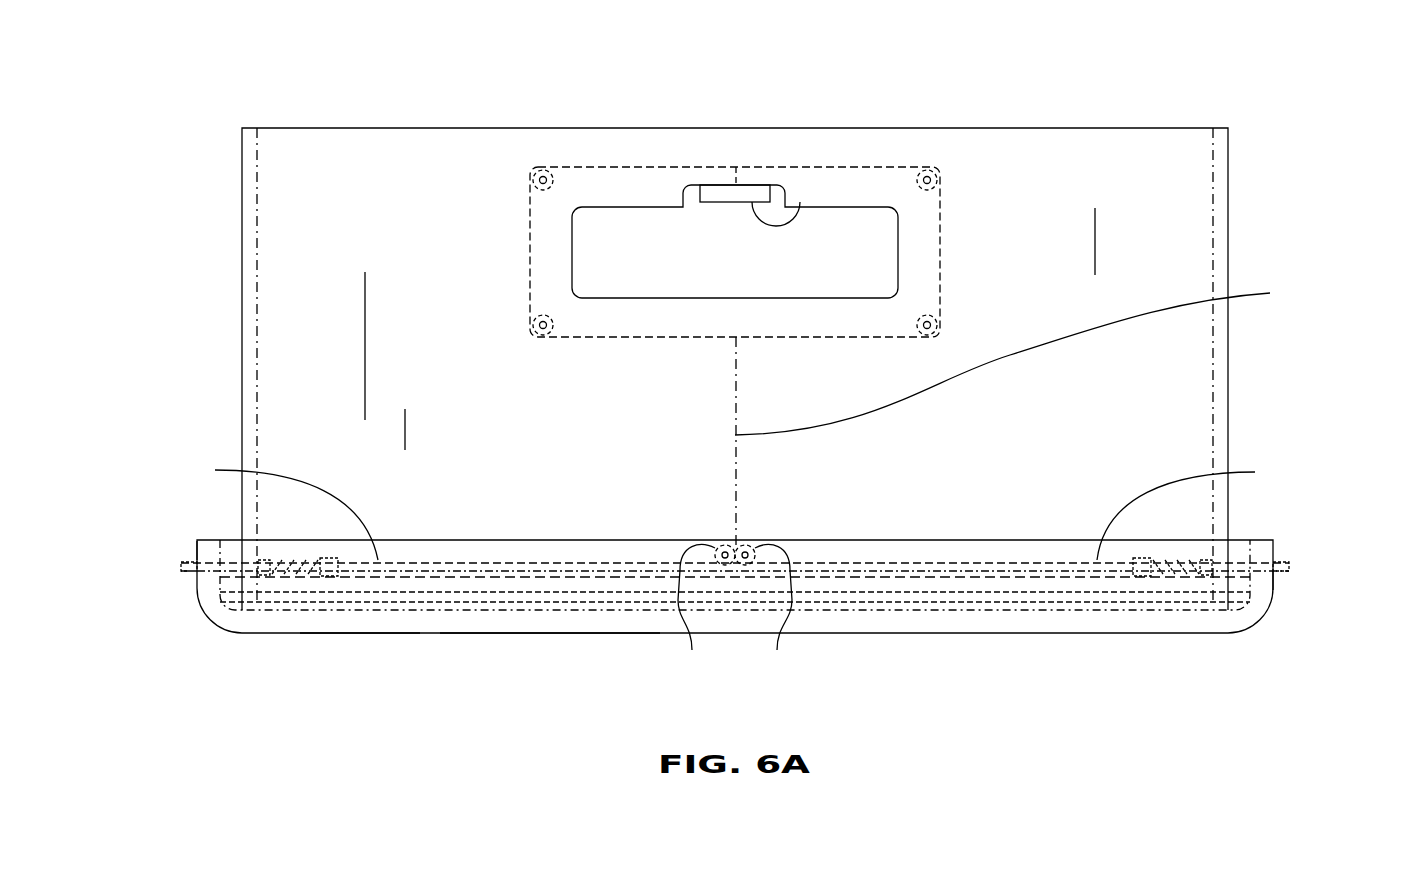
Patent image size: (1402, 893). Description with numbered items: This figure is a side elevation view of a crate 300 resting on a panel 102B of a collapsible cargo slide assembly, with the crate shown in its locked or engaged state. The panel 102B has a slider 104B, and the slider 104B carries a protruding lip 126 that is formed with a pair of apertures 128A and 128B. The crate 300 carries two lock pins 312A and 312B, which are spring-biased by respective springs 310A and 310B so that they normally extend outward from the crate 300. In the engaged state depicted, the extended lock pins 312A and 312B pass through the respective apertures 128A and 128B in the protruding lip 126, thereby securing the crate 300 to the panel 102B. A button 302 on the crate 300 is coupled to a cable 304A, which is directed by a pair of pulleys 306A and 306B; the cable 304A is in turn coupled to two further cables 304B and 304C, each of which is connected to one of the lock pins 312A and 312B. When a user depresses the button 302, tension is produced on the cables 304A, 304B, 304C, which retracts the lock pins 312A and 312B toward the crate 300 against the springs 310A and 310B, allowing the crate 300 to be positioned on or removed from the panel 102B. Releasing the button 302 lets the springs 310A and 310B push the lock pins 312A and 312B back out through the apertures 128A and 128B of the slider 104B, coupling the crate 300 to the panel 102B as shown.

The crate 300 is at (288, 127).
The button 302 is at (797, 210).
The cable 304A is at (1038, 357).
The cable 304B is at (261, 509).
The cable 304C is at (1211, 510).
The pulley 306A is at (703, 616).
The pulley 306B is at (777, 623).
The spring 310A is at (305, 578).
The spring 310B is at (1173, 575).
The lock pin 312A is at (181, 567).
The lock pin 312B is at (1290, 566).
The protruding lip 126 is at (1276, 548).
The aperture 128A is at (196, 560).
The aperture 128B is at (1275, 572).
The panel 102B is at (428, 635).
The slider 104B is at (510, 634).